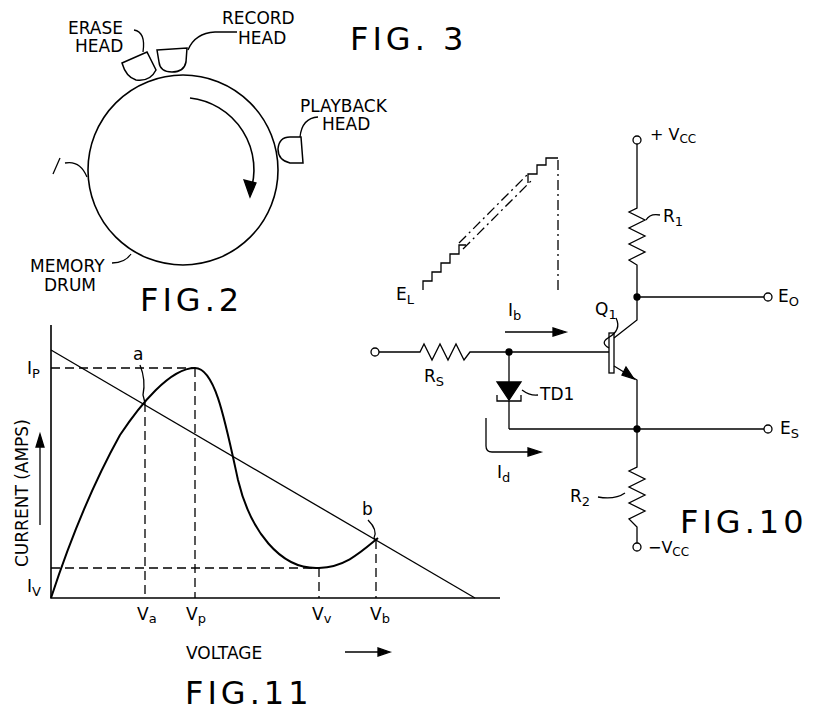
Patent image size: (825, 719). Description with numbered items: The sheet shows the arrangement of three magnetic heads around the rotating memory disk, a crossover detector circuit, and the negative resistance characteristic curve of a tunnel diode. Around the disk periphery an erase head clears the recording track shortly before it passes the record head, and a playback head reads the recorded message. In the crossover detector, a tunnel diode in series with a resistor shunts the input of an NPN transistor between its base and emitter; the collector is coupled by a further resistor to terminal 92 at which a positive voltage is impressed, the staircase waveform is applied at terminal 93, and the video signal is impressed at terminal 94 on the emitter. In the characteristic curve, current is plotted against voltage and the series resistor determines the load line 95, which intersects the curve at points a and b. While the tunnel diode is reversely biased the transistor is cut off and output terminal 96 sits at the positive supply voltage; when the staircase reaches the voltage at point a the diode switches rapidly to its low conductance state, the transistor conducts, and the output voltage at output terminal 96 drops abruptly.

In FIG. 10, the terminal 92 is at (638, 136).
In FIG. 10, the terminal 93 is at (375, 357).
In FIG. 10, the terminal 94 is at (770, 425).
In FIG. 11, the load line 95 is at (250, 462).
In FIG. 10, the output terminal 96 is at (765, 303).